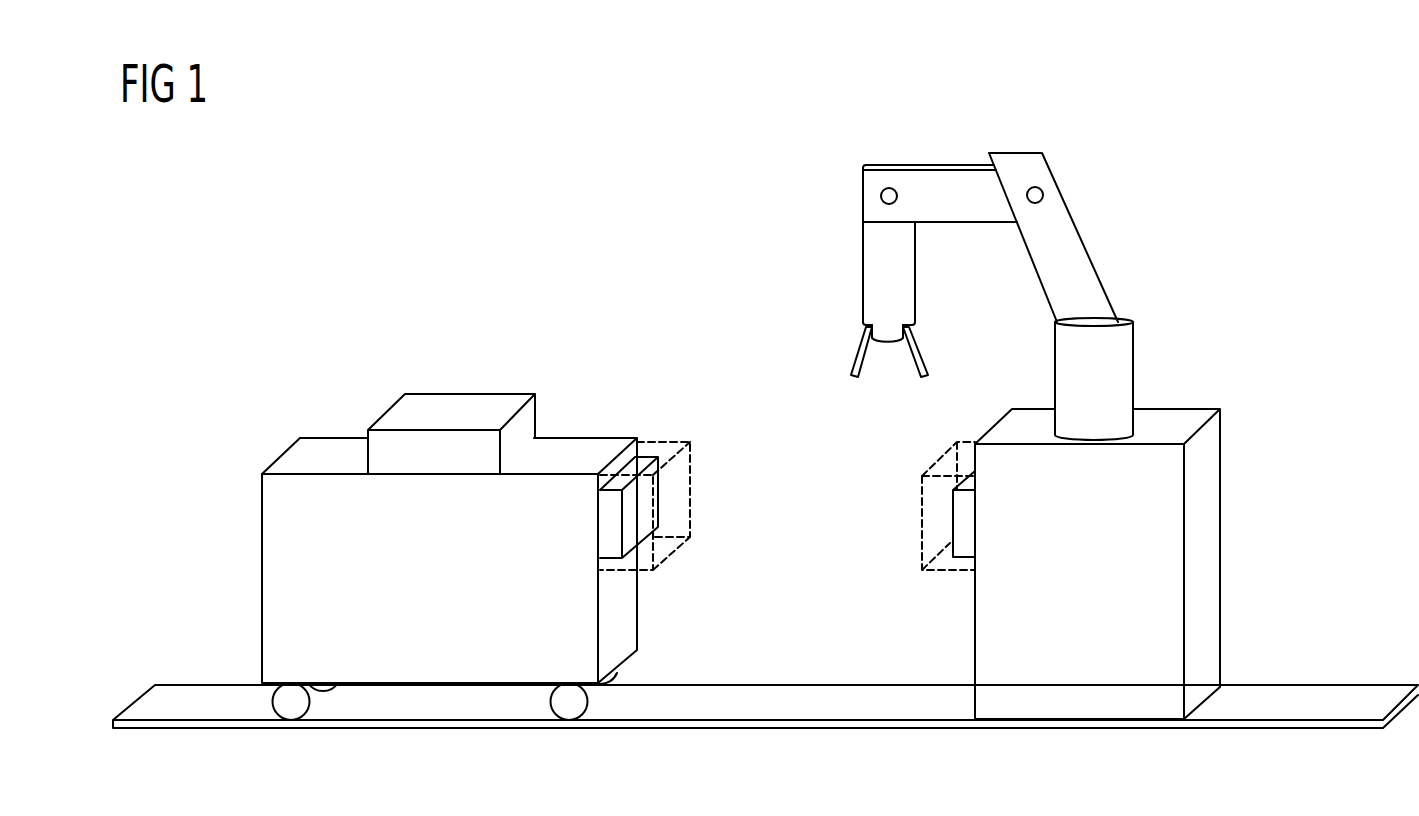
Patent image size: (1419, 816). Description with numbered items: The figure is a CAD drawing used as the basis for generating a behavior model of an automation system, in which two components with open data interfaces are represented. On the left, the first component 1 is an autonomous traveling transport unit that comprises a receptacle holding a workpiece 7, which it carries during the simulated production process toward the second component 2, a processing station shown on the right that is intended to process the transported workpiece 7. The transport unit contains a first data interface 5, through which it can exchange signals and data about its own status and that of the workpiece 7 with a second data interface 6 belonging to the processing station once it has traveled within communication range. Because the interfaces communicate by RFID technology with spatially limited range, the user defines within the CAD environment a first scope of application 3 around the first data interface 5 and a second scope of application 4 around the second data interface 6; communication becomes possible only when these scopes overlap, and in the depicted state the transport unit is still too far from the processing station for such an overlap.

The first component 1 is at (262, 546).
The second component 2 is at (1116, 242).
The first scope of application 3 is at (690, 494).
The second scope of application 4 is at (937, 457).
The first data interface 5 is at (610, 525).
The second data interface 6 is at (953, 517).
The workpiece 7 is at (452, 395).